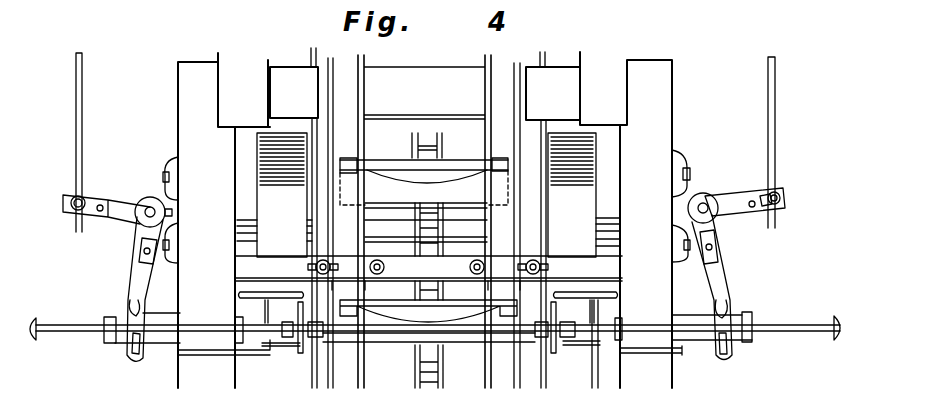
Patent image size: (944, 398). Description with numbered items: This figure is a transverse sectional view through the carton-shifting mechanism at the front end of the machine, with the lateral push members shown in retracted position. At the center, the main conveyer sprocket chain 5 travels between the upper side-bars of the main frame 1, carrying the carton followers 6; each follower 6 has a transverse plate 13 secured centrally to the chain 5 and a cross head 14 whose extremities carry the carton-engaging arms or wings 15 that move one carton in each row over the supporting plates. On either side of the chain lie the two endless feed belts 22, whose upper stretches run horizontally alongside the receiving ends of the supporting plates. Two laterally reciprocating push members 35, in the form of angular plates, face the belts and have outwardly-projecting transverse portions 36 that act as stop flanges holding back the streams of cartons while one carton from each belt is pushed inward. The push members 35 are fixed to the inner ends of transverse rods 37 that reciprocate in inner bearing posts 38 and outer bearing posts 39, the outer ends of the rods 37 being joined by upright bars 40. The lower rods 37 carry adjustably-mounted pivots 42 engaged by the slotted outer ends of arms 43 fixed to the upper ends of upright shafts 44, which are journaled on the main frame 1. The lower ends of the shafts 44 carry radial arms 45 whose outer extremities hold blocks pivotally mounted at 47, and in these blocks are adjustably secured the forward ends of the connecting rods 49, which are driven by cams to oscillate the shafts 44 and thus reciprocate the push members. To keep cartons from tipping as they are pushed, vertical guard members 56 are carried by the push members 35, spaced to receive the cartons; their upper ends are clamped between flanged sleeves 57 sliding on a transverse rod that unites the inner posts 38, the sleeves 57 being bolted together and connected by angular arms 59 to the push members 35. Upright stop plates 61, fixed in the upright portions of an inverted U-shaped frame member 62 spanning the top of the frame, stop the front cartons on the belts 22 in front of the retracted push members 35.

The main frame 1 is at (671, 98).
The sprocket chain 5 is at (441, 156).
The carton follower 6 is at (384, 168).
The transverse plate 13 is at (424, 188).
The cross head 14 is at (424, 172).
The carton-engaging arms or wings 15 is at (345, 159).
The feed belts 22 is at (312, 362).
The push members 35 is at (272, 300).
The transverse portions 36 is at (213, 355).
The transverse bars or rods 37 is at (68, 331).
The inner bearing posts 38 is at (622, 322).
The outer bearing posts 39 is at (750, 318).
The upright bars 40 is at (841, 341).
The pivots 42 is at (134, 308).
The arms 43 is at (140, 281).
The upright shafts 44 is at (146, 197).
The radial arms 45 is at (116, 200).
The pivot of block 47 is at (782, 205).
The connecting links or rods 49 is at (83, 112).
The guard members 56 is at (553, 347).
The flanged sleeves 57 is at (318, 338).
The angular arms 59 is at (285, 346).
The stop members or plates 61 is at (258, 292).
The inverted U-shaped frame members 62 is at (500, 262).